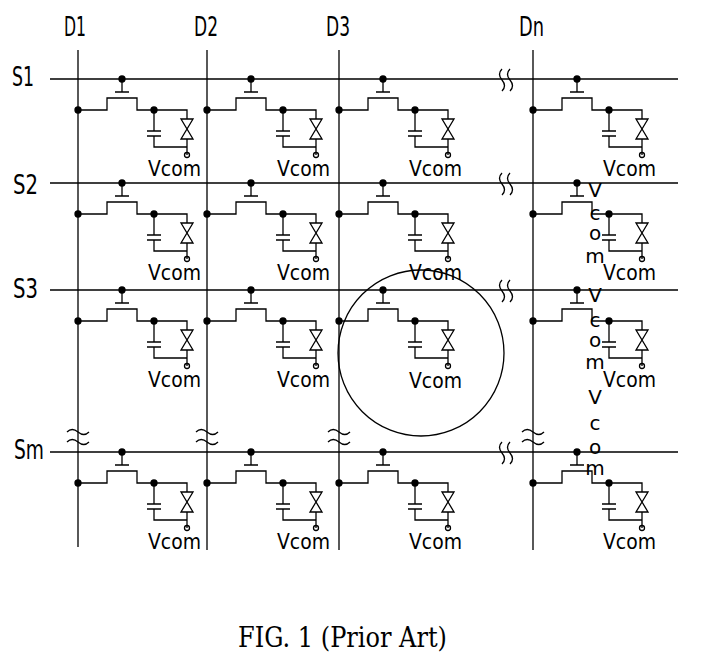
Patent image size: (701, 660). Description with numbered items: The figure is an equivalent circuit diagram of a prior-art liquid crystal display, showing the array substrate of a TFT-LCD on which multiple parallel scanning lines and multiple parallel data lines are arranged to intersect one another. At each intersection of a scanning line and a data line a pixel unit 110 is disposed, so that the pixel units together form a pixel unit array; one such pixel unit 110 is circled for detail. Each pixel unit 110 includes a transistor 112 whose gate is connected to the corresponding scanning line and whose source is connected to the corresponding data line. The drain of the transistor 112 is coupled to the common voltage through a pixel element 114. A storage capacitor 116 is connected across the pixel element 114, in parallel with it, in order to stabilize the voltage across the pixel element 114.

The pixel unit 110 is at (489, 401).
The transistor 112 is at (400, 320).
The pixel element 114 is at (453, 341).
The storage capacitor 116 is at (409, 346).